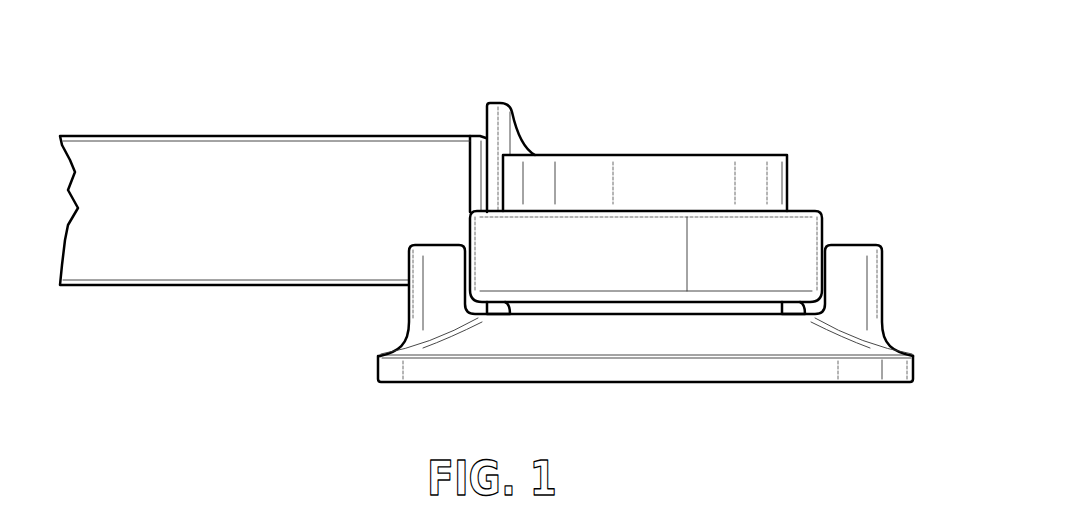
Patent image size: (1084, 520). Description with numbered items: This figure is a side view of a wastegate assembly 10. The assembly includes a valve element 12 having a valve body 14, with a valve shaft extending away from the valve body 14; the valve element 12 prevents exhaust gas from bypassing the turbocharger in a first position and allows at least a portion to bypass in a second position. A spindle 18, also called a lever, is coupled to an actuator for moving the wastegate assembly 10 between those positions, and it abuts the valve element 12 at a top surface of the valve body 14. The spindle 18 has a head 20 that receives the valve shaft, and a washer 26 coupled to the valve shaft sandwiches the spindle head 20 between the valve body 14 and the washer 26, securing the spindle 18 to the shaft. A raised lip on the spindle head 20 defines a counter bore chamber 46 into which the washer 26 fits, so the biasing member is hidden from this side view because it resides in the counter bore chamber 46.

The wastegate assembly 10 is at (724, 80).
The valve element 12 is at (374, 368).
The valve body 14 is at (705, 368).
The spindle 18 is at (208, 160).
The head 20 is at (808, 229).
The washer 26 is at (775, 180).
The counter bore chamber 46 is at (500, 207).